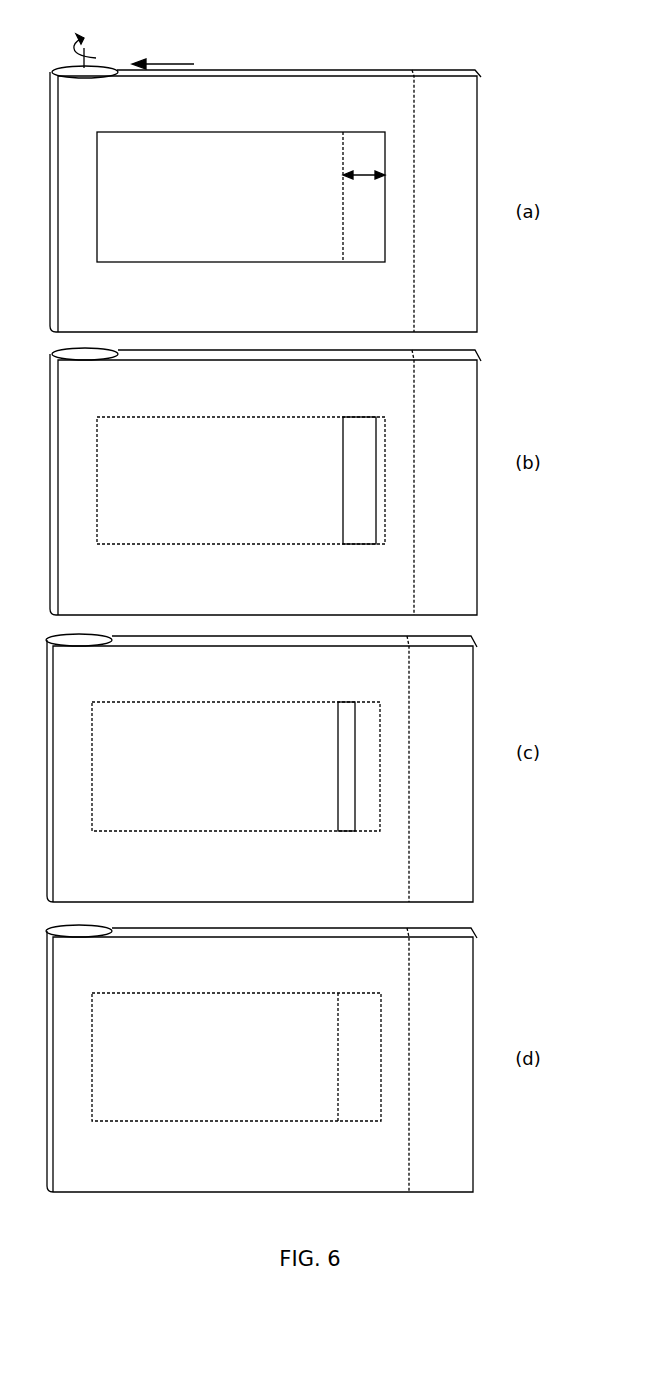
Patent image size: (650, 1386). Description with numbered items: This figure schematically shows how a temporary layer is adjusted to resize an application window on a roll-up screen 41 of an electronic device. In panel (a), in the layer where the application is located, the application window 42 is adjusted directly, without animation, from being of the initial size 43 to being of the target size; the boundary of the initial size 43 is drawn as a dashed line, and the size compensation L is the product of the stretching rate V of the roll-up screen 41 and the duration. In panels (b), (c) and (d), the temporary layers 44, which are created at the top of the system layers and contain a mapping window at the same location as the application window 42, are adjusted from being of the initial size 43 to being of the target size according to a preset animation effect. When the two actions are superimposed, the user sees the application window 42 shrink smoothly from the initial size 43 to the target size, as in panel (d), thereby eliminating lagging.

The roll-up screen 41 is at (224, 84).
The application window 42 is at (252, 128).
The initial size 43 is at (345, 132).
The temporary layer 44 is at (378, 453).